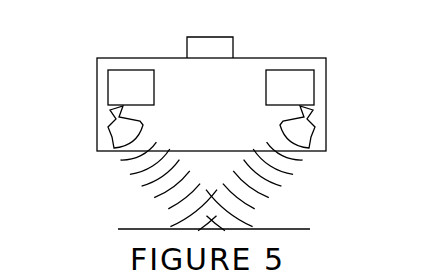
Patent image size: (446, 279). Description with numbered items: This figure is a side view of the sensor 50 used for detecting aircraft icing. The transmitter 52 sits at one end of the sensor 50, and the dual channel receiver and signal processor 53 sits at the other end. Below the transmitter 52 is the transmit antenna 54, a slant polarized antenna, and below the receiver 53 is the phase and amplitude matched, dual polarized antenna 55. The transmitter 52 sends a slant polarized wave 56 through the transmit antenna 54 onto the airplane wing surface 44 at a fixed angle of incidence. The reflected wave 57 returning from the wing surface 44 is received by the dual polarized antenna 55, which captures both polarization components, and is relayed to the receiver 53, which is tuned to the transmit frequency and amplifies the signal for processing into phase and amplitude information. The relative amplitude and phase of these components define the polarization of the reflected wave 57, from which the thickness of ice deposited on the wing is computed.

The sensor 50 is at (310, 38).
The transmitter 52 is at (137, 70).
The dual channel receiver and signal processor 53 is at (314, 83).
The transmit antenna 54 is at (110, 121).
The dual polarized antenna 55 is at (310, 130).
The slant polarized wave 56 is at (163, 192).
The reflected wave 57 is at (263, 183).
The wing surface 44 is at (280, 229).